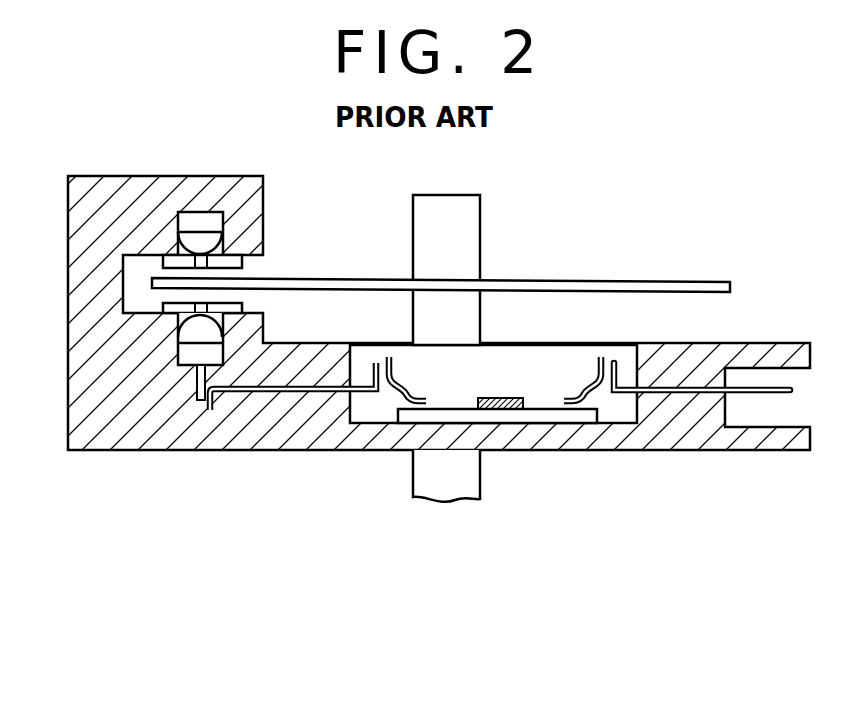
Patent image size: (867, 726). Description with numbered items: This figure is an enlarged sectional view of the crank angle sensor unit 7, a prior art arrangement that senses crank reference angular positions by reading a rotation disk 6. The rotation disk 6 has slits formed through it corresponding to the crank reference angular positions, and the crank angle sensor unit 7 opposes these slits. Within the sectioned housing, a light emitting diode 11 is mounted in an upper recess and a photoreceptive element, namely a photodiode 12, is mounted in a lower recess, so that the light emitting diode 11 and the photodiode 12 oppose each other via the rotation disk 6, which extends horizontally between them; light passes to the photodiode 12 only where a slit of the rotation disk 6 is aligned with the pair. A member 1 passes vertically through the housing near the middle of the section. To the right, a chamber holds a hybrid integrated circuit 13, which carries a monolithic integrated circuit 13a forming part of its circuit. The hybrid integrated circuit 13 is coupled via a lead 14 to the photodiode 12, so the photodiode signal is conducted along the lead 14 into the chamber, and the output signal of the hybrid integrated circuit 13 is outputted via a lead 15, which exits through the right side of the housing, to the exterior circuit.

The crank angle sensor unit 7 is at (53, 293).
The lever 1 is at (465, 227).
The rotation disk 6 is at (621, 281).
The light emitting diode 11 is at (213, 240).
The photodiode 12 is at (197, 337).
The lead 14 is at (287, 394).
The hybrid integrated circuit 13 is at (533, 418).
The monolithic integrated circuit 13a is at (498, 397).
The lead 15 is at (677, 398).